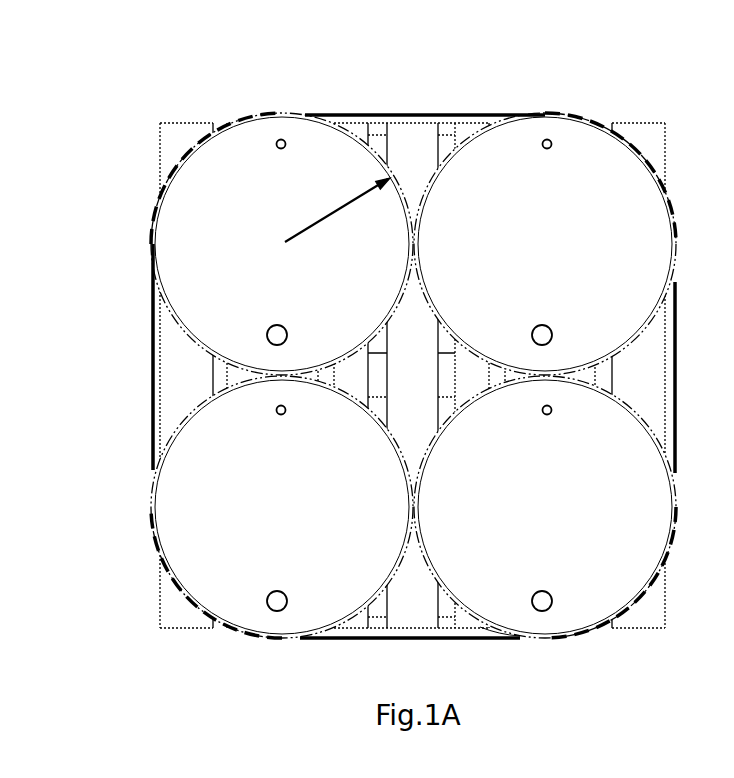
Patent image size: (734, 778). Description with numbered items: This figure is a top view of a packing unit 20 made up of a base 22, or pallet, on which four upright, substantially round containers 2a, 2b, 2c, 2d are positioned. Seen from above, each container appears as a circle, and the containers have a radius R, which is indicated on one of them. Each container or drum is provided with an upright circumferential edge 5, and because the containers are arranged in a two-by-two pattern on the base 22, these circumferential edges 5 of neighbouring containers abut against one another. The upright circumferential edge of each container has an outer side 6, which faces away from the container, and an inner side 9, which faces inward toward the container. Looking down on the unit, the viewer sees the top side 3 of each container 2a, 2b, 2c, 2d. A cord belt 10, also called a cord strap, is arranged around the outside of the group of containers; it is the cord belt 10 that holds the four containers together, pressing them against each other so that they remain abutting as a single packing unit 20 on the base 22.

The container 2a is at (202, 498).
The container 2b is at (592, 582).
The container 2c is at (332, 160).
The container 2d is at (580, 145).
The top side 3 is at (592, 518).
The upright circumferential edge 5 is at (668, 455).
The outer side 6 is at (478, 650).
The inner side 9 is at (500, 618).
The cord belt 10 is at (457, 113).
The packing unit 20 is at (680, 118).
The base 22 is at (400, 603).
The radius R is at (337, 213).